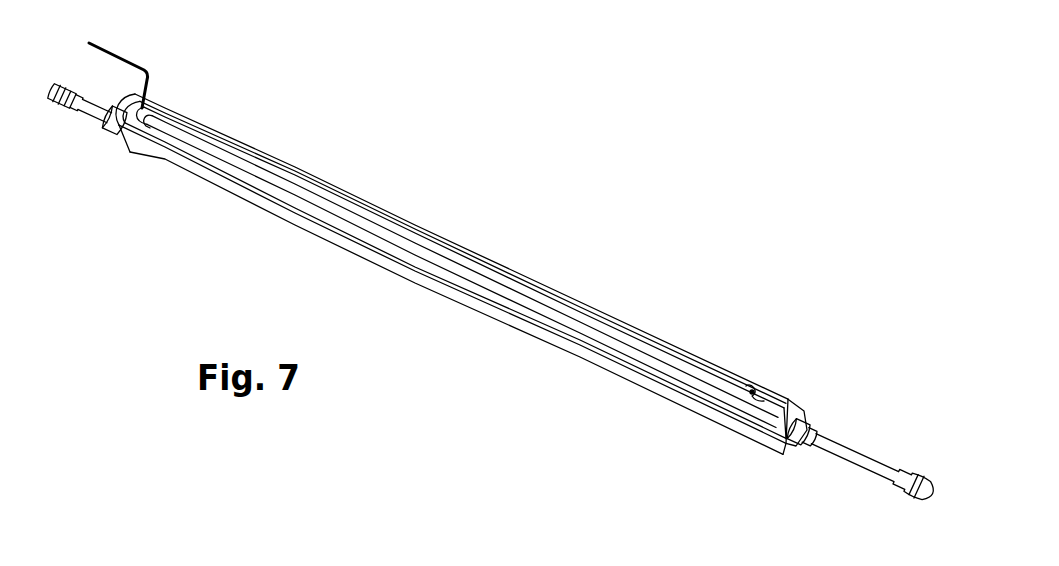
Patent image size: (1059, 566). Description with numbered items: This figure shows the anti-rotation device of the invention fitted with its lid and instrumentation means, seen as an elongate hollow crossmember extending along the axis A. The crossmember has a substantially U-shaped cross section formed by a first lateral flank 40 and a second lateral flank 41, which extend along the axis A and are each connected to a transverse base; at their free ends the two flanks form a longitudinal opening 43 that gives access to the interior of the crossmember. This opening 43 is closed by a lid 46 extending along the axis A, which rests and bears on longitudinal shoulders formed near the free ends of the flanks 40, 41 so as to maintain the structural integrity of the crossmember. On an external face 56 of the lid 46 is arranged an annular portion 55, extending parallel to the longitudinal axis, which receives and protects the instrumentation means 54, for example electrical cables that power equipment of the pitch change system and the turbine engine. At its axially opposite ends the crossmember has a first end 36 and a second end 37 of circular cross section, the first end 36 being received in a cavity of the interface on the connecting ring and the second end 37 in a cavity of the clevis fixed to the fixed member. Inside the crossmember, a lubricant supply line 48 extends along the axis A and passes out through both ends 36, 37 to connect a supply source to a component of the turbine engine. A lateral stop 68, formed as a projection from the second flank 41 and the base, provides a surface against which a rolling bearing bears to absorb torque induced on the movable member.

The first end 36 is at (113, 122).
The second end 37 is at (797, 444).
The first lateral flank 40 is at (157, 158).
The second lateral flank 41 is at (317, 181).
The longitudinal opening 43 is at (846, 5).
The lid 46 is at (746, 389).
The line 48 is at (88, 108).
The instrumentation means 54 is at (168, 90).
The annular portion 55 is at (230, 160).
The external face 56 is at (633, 334).
The lateral stop 68 is at (810, 412).
The axis A is at (940, 5).